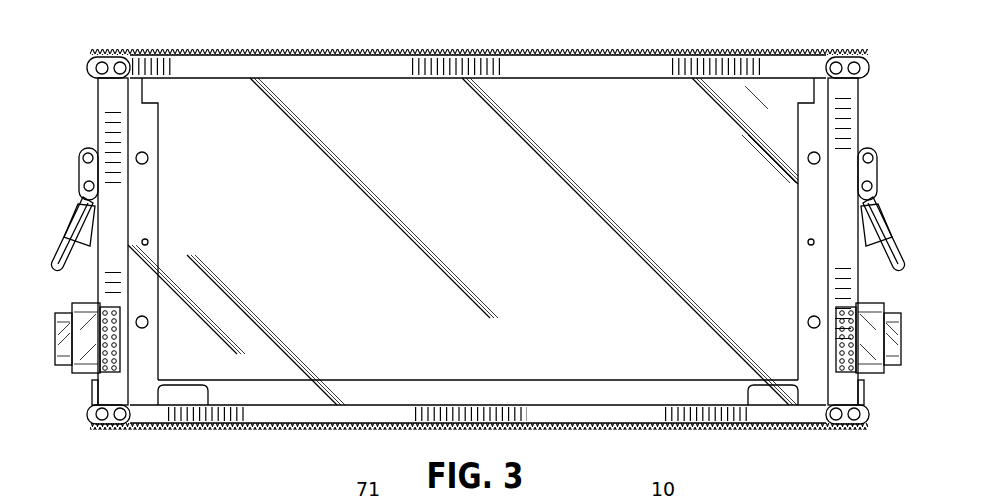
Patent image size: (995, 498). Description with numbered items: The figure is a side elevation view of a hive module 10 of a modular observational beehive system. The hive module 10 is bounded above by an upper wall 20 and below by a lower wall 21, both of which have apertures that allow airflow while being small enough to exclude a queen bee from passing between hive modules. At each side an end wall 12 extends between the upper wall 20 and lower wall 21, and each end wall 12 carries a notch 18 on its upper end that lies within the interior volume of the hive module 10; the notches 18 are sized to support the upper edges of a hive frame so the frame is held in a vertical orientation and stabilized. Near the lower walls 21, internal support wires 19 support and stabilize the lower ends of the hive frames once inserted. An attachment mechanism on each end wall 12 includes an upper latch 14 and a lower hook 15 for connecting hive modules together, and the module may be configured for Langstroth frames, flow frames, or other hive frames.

The hive module 10 is at (642, 45).
The end wall 12 is at (148, 188).
The upper latch 14 is at (85, 188).
The lower hook 15 is at (83, 408).
The notch 18 is at (143, 87).
The internal support wire 19 is at (177, 385).
The upper wall 20 is at (314, 72).
The lower wall 21 is at (252, 420).